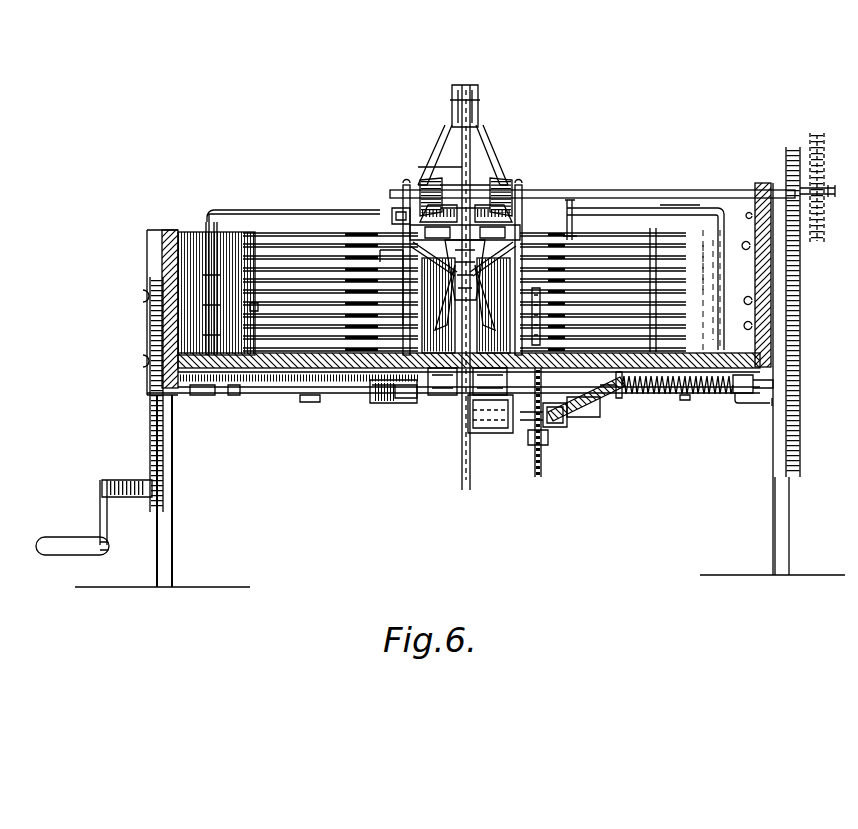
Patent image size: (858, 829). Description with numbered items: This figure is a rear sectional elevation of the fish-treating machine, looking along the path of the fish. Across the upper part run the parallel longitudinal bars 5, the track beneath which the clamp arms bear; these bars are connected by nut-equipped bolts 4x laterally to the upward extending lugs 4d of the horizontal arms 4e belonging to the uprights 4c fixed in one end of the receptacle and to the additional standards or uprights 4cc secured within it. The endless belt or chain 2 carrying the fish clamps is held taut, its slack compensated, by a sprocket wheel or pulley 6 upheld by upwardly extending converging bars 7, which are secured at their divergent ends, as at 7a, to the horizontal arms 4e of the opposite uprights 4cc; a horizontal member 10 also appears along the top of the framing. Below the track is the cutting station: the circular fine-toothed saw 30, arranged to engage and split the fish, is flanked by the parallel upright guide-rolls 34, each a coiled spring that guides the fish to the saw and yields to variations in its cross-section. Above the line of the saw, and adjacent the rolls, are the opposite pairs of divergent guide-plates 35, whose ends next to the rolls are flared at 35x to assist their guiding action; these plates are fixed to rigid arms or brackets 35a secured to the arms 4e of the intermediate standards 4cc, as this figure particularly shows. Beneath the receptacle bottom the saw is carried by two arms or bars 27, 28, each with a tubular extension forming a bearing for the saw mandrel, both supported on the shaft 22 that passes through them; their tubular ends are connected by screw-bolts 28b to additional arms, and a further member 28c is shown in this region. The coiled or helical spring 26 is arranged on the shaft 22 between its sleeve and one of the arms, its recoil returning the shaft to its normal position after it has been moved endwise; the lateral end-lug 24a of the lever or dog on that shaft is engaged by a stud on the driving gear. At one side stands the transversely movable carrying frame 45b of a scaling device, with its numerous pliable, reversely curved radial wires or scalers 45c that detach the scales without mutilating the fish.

The sprocket wheel or pulley 6 is at (463, 92).
The converging bars 7 is at (446, 133).
The endless belt or chain 2 is at (431, 167).
The parallel longitudinal bars 5 is at (474, 205).
The nut-equipped bolts 4x is at (385, 228).
The horizontal arms 4e is at (400, 222).
The securing points of converging bars 7a is at (528, 212).
The carrying frame 45b is at (665, 198).
The additional standards or uprights 4cc is at (545, 240).
The radial wires or scalers 45c is at (655, 233).
The shaft 10 is at (736, 192).
The uprights 4c is at (225, 248).
The divergent guide-plates 35 is at (400, 318).
The upward extending lugs 4d is at (402, 212).
The flared ends of guide-plates 35x is at (253, 307).
The rigid arms or brackets 35a is at (410, 265).
The upright guide-rolls 34 is at (402, 400).
The circular fine-toothed saw 30 is at (468, 478).
The bracket 28c is at (507, 432).
The screw-bolts 28b is at (533, 470).
The arm or bar 28 is at (543, 437).
The shaft 22 is at (567, 427).
The arm or bar 27 is at (597, 410).
The coiled or helical spring 26 is at (685, 397).
The lateral end-lug 24a is at (755, 403).